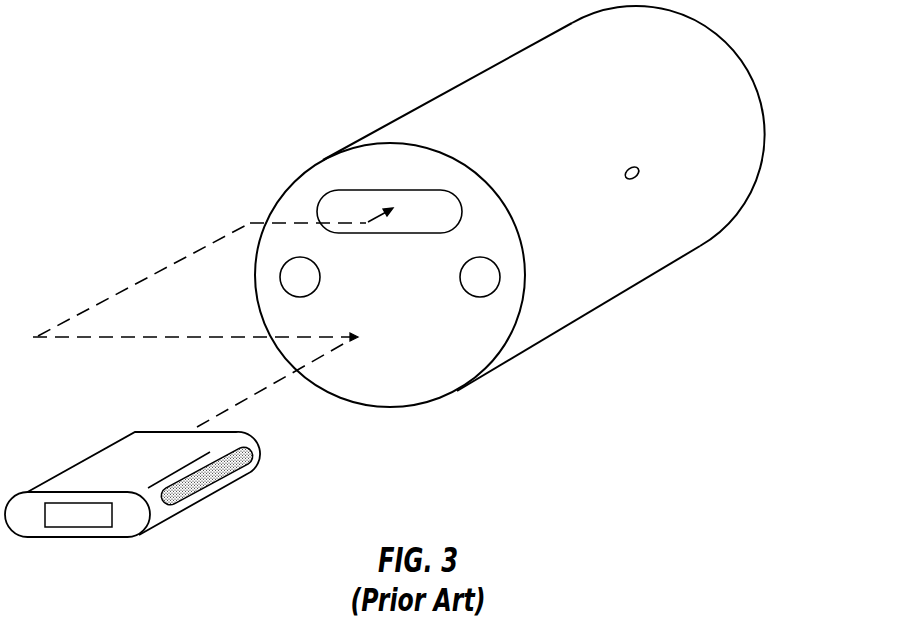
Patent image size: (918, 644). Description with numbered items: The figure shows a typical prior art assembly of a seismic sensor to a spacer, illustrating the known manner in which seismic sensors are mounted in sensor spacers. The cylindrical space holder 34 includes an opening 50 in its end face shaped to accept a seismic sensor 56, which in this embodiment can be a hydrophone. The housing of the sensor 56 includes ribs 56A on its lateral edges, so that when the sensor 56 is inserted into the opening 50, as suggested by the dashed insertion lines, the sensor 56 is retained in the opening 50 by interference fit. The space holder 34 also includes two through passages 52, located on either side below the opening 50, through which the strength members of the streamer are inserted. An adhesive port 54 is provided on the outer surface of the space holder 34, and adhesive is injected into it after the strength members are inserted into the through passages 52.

The space holder 34 is at (607, 307).
The opening 50 is at (443, 215).
The through passages 52 is at (300, 275).
The adhesive port 54 is at (625, 179).
The seismic sensor 56 is at (85, 458).
The ribs 56A is at (213, 480).